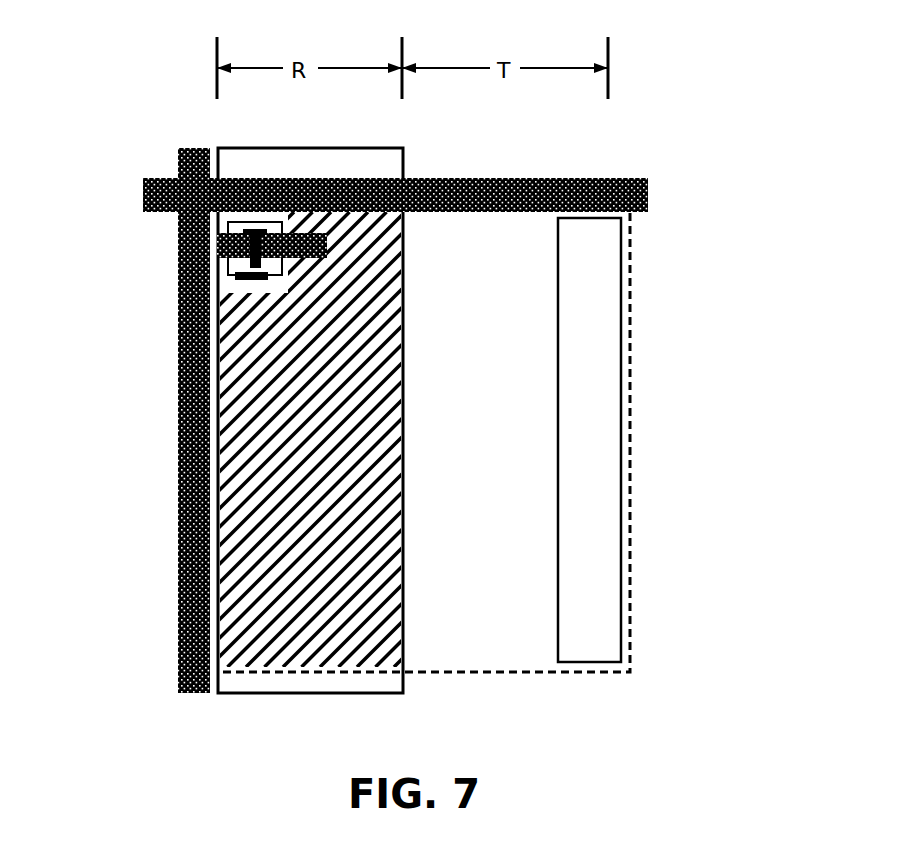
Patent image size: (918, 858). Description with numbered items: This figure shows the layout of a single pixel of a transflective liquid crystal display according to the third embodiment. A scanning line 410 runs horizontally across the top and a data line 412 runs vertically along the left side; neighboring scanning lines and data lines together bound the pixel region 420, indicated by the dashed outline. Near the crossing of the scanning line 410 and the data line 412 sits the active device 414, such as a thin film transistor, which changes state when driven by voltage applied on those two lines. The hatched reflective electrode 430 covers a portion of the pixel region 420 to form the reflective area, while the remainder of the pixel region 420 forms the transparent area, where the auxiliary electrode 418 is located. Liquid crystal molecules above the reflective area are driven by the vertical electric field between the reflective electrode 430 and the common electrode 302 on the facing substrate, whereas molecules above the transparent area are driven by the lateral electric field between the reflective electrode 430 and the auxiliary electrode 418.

The common electrode 302 is at (273, 683).
The scanning line 410 is at (648, 188).
The data line 412 is at (179, 519).
The active device 414 is at (230, 262).
The auxiliary electrode 418 is at (602, 550).
The pixel region 420 is at (630, 327).
The reflective electrode 430 is at (357, 607).